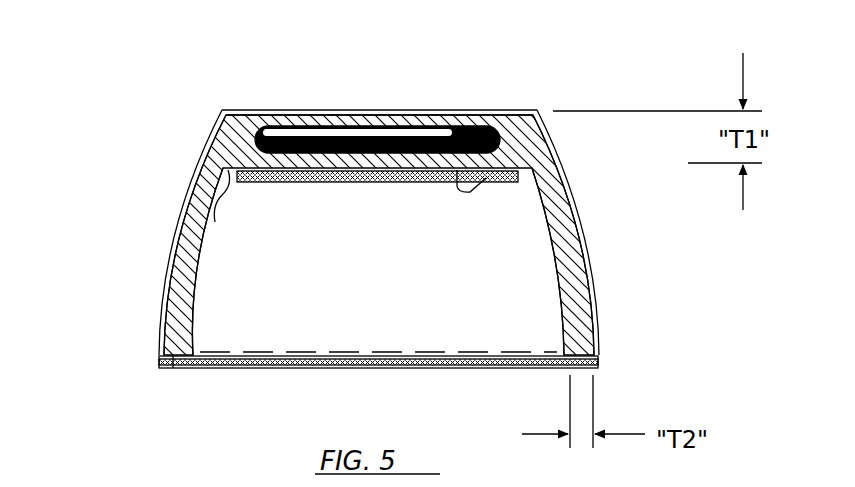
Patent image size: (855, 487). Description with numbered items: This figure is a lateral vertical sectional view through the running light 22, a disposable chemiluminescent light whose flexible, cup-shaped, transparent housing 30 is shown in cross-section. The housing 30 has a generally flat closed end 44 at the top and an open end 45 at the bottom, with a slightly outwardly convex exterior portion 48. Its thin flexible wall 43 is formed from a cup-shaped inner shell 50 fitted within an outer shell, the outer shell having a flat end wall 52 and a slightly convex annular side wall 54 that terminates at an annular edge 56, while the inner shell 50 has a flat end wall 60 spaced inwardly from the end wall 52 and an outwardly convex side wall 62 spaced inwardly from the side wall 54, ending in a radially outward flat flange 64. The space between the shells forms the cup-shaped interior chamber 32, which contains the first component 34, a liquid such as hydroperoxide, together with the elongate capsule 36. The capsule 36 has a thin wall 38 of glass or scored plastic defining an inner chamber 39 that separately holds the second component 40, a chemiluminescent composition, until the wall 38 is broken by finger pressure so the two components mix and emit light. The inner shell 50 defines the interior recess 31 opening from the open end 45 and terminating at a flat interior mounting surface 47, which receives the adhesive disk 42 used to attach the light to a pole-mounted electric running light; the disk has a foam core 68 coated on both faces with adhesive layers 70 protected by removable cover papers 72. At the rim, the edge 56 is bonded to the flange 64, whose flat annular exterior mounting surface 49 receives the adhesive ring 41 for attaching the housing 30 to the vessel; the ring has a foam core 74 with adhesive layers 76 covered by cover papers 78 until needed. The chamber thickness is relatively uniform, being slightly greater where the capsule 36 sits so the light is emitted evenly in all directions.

The running light 22 is at (617, 88).
The housing 30 is at (584, 191).
The interior recess 31 is at (441, 336).
The interior chamber 32 is at (240, 124).
The first component 34 is at (180, 295).
The capsule 36 is at (478, 121).
The thin wall 38 is at (379, 127).
The inner chamber 39 is at (320, 137).
The second component 40 is at (412, 137).
The adhesive ring 41 is at (218, 375).
The adhesive disk 42 is at (368, 202).
The wall 43 is at (574, 213).
The closed end 44 is at (190, 102).
The open end 45 is at (624, 341).
The interior mounting surface 47 is at (470, 192).
The exterior portion 48 is at (198, 166).
The exterior mounting surface 49 is at (172, 369).
The inner shell 50 is at (198, 312).
The end wall 52 is at (261, 115).
The side wall 54 is at (594, 258).
The annular edge 56 is at (609, 411).
The end wall 60 is at (457, 170).
The side wall 62 is at (563, 290).
The flange 64 is at (173, 371).
The foam core 68 is at (220, 212).
The adhesive layers 70 is at (478, 191).
The cover papers 72 is at (283, 183).
The foam core 74 is at (158, 362).
The adhesive layers 76 is at (317, 354).
The cover papers 78 is at (405, 370).